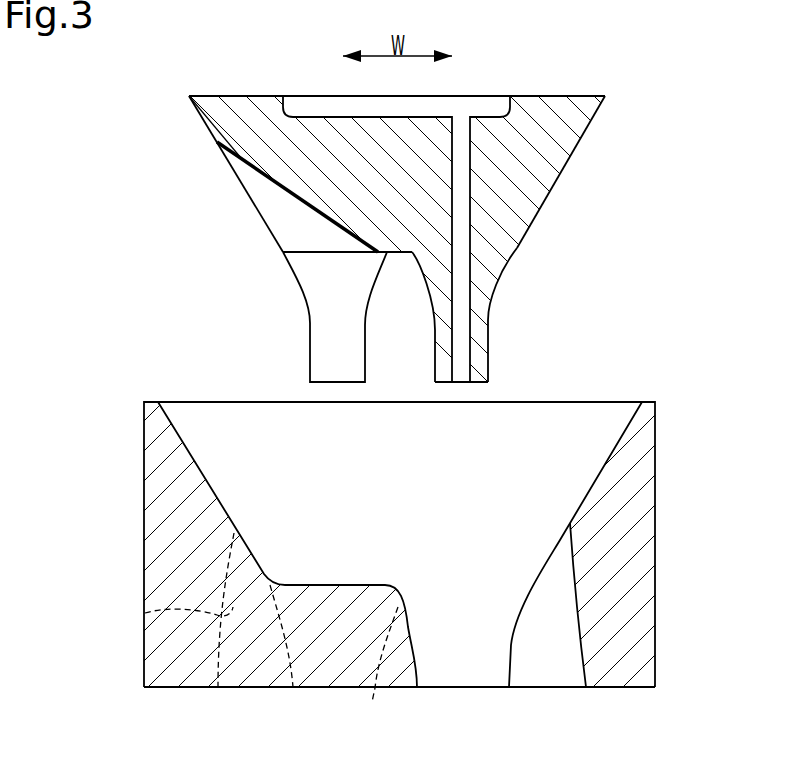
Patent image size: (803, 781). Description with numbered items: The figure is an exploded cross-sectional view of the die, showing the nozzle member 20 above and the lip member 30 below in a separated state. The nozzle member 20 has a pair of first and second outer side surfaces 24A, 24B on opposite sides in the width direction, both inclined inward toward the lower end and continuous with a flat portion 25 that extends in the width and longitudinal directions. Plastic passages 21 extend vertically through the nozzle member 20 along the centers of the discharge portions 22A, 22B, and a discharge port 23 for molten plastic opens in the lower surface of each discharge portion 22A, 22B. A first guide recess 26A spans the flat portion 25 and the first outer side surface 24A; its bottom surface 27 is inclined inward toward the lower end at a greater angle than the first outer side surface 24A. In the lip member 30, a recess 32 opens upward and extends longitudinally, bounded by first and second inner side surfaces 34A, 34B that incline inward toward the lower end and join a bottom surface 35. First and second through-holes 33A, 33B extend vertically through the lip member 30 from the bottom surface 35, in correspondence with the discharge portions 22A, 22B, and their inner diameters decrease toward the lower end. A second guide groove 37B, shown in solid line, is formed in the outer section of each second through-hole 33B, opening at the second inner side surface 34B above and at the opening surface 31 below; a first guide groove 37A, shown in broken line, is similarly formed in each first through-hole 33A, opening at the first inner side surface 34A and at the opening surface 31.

The nozzle member 20 is at (580, 93).
The plastic passage 21 is at (462, 124).
The first discharge portion 22A is at (310, 360).
The second discharge portion 22B is at (488, 345).
The discharge port 23 is at (463, 378).
The first outer side surface 24A is at (232, 171).
The second outer side surface 24B is at (558, 185).
The flat portion 25 is at (334, 254).
The first guide recess 26A is at (260, 206).
The bottom surface of the first guide recess 27 is at (313, 210).
The lip member 30 is at (661, 461).
The opening surface 31 is at (170, 688).
The recess 32 is at (400, 543).
The first through-hole 33A is at (375, 670).
The second through-hole 33B is at (420, 668).
The first inner side surface 34A is at (212, 491).
The second inner side surface 34B is at (596, 481).
The bottom surface 35 is at (352, 584).
The first guide groove 37A is at (146, 613).
The second guide groove 37B is at (570, 604).